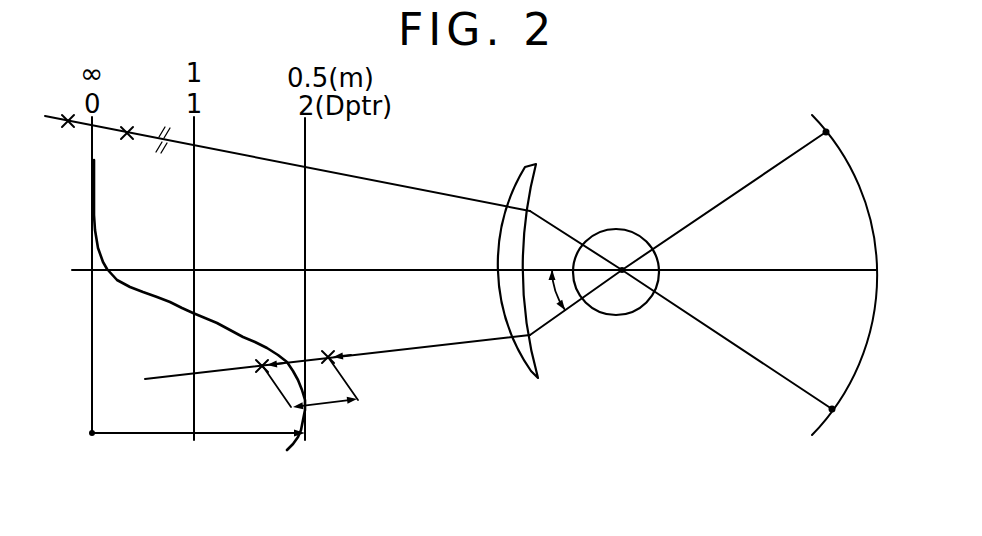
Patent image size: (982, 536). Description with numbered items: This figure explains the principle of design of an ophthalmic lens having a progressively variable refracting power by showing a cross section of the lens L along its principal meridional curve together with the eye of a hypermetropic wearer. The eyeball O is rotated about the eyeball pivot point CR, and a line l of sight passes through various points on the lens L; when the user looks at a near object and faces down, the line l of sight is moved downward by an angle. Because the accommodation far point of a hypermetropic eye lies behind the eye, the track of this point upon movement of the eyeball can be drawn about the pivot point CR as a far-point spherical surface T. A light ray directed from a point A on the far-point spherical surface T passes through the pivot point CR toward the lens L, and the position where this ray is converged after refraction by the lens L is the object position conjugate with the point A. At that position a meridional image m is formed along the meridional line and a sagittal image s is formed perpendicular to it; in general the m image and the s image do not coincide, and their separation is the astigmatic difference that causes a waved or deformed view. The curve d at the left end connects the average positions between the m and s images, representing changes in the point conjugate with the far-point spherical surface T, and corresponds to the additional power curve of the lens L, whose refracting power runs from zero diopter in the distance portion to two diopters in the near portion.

The sagittal image s is at (172, 261).
The meridional image m is at (243, 263).
The curve d is at (212, 304).
The lens displacement amount AD is at (197, 453).
The ophthalmic lens L is at (530, 163).
The eyeball pivot point CR is at (620, 266).
The eyeball O is at (627, 229).
The point on the far-point spherical surface A is at (835, 255).
The far-point spherical surface T is at (857, 177).
The line of sight l is at (760, 177).